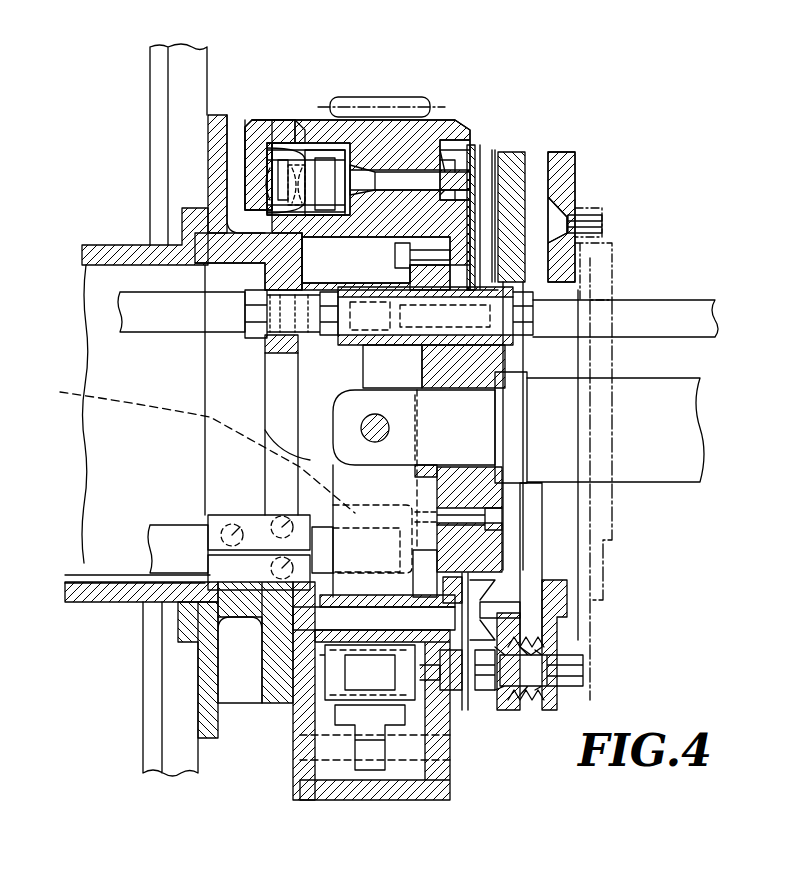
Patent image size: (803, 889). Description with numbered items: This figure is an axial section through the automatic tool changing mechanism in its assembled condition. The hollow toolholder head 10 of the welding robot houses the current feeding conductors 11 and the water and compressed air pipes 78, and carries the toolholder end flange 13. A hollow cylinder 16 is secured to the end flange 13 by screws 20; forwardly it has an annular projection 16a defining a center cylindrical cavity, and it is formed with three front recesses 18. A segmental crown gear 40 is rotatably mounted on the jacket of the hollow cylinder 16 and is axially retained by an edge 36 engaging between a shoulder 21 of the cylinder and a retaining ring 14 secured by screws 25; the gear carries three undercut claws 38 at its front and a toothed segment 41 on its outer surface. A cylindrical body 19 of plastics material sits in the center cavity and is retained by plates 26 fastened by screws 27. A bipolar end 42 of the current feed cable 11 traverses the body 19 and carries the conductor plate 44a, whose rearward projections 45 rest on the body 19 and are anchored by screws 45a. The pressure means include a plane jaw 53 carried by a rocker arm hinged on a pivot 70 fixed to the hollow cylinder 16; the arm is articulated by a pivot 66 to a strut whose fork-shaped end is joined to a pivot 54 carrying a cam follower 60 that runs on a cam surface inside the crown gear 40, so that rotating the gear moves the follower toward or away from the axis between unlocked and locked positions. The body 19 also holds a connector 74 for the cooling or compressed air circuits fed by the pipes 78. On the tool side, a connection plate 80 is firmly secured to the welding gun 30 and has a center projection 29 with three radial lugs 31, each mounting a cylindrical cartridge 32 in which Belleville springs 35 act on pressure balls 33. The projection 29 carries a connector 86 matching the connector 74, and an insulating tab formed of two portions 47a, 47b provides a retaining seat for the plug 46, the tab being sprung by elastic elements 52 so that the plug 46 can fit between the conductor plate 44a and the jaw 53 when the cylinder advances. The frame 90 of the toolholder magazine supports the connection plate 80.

The toolholder head 10 is at (590, 567).
The current feeding conductors 11 is at (675, 442).
The toolholder end flange 13 is at (530, 723).
The retaining ring 14 is at (470, 157).
The hollow cylinder 16 is at (382, 165).
The annular projection 16a is at (265, 266).
The front recesses 18 is at (352, 152).
The cylindrical body 19 is at (470, 550).
The screws 20 is at (425, 185).
The shoulder 21 is at (540, 137).
The screws 25 is at (463, 712).
The plates 26 is at (420, 283).
The screws 27 is at (395, 256).
The center projection 29 is at (268, 672).
The welding gun 30 is at (105, 255).
The radial lugs 31 is at (257, 157).
The cylindrical cartridge 32 is at (298, 150).
The pressure balls 33 is at (290, 185).
The Belleville springs 35 is at (308, 150).
The edge 36 is at (438, 173).
The undercut claws 38 is at (270, 183).
The segmental crown gear 40 is at (430, 800).
The toothed segment 41 is at (390, 104).
The bipolar end 42 is at (447, 405).
The conductor plate 44a is at (347, 472).
The rearward projections 45 is at (500, 504).
The screws 45a is at (470, 522).
The plug 46 is at (320, 462).
The tab portion 47a is at (245, 527).
The tab portion 47b is at (120, 577).
The elastic elements 52 is at (250, 524).
The plane jaw 53 is at (191, 443).
The pivot 54 is at (320, 742).
The cam follower 60 is at (372, 767).
The pivot 66 is at (305, 652).
The pivot 70 is at (275, 682).
The connector 74 is at (442, 320).
The pipes 78 is at (702, 336).
The connection plate 80 is at (226, 102).
The connector 86 is at (296, 332).
The frame 90 is at (160, 77).